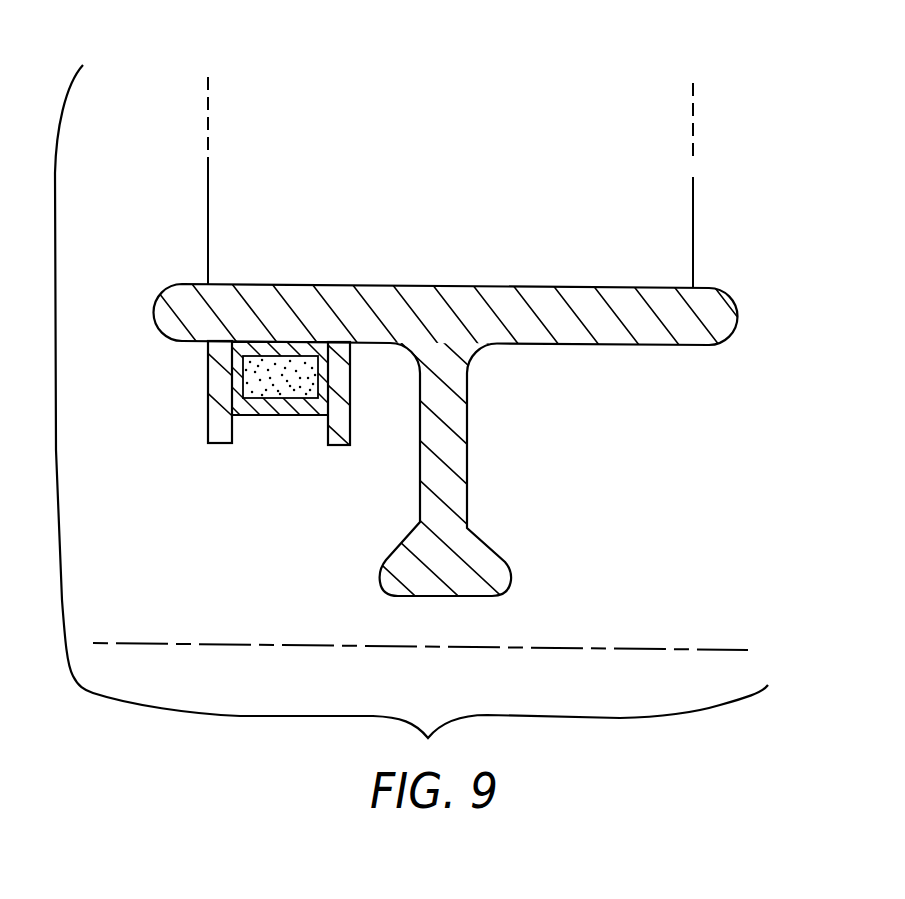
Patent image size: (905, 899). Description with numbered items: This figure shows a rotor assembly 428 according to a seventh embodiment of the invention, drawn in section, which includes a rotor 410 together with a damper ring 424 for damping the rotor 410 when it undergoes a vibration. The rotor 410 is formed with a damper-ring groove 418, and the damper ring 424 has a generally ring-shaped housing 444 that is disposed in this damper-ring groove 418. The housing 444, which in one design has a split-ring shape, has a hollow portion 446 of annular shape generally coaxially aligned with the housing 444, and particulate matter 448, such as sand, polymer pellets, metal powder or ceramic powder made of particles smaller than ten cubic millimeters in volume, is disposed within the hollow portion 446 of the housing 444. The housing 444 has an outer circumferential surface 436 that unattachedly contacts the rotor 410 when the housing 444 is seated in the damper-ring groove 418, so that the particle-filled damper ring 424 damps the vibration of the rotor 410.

The rotor 410 is at (702, 290).
The rotor assembly 428 is at (713, 125).
The damper-ring groove 418 is at (303, 356).
The damper ring 424 is at (303, 415).
The outer circumferential surface 436 is at (262, 340).
The housing 444 is at (257, 413).
The hollow portion 446 is at (307, 388).
The particulate matter 448 is at (250, 380).